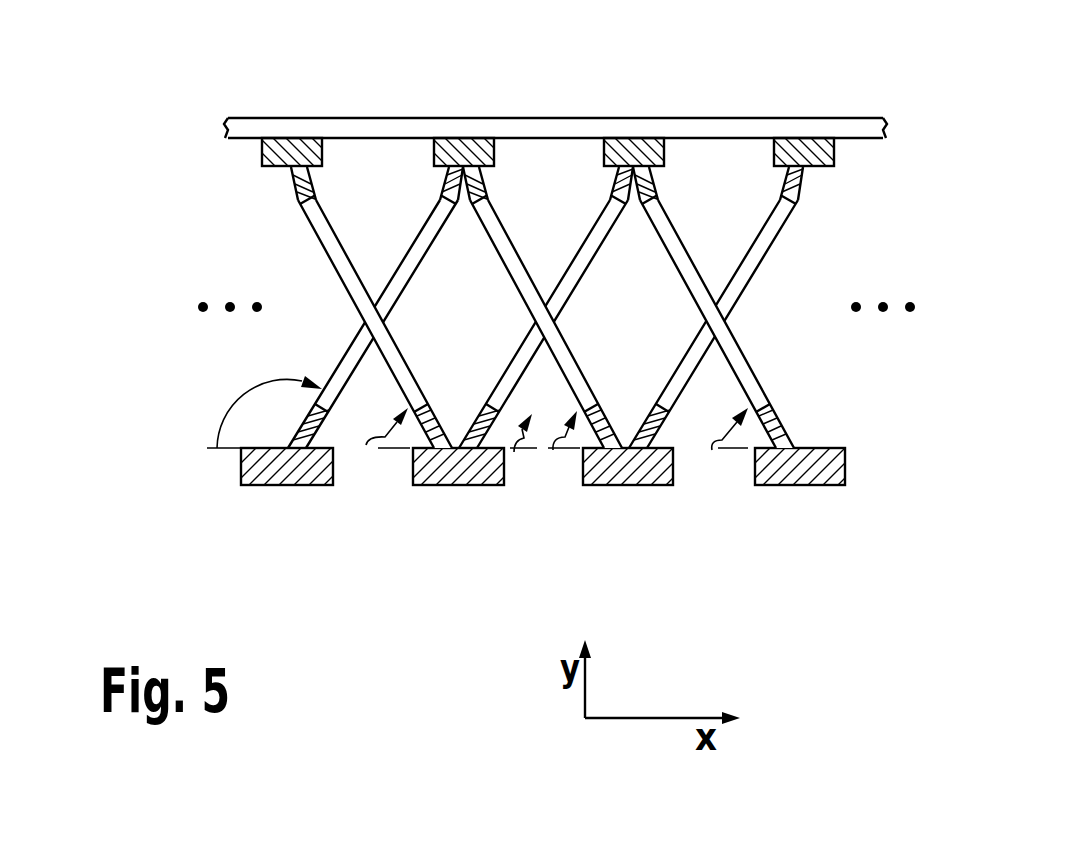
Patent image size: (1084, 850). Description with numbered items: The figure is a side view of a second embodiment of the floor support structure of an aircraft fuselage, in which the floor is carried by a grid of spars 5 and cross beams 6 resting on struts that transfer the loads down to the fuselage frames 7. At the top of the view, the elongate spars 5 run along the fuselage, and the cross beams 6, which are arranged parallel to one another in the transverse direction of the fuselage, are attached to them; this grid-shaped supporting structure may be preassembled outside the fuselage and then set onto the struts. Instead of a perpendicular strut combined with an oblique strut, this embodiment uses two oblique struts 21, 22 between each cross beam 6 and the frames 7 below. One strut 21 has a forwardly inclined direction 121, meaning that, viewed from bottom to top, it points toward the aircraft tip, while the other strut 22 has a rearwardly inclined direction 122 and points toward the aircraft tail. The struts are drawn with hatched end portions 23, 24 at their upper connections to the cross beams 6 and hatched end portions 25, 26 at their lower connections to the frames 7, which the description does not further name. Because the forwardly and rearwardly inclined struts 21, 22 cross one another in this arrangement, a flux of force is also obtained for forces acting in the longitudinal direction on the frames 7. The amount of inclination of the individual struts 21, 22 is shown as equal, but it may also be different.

The spar 5 is at (378, 130).
The cross beam 6 is at (296, 156).
The frame 7 is at (262, 475).
The strut 21 is at (400, 352).
The strut 22 is at (408, 262).
The upper joint of first strut 23 is at (308, 190).
The upper joint of second strut 24 is at (446, 186).
The lower joint of first strut 25 is at (440, 413).
The lower joint of second strut 26 is at (297, 455).
The forwardly inclined direction 121 is at (366, 445).
The rearwardly inclined direction 122 is at (242, 398).